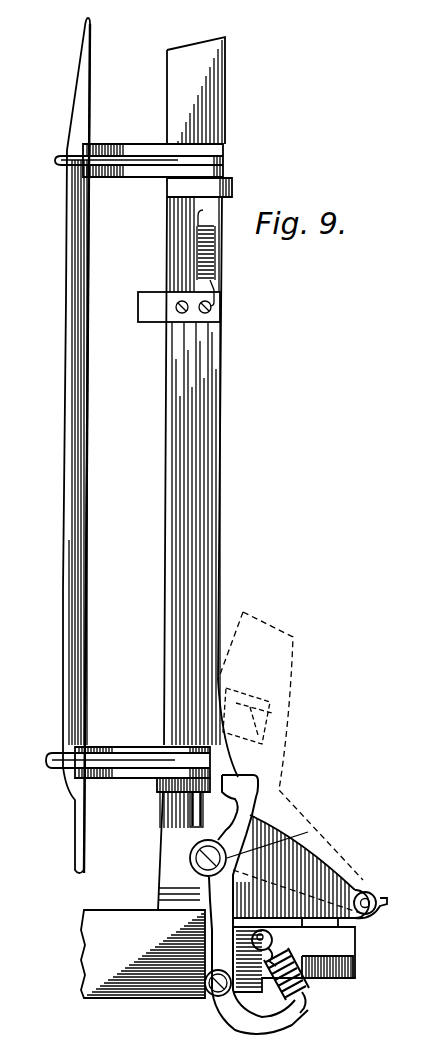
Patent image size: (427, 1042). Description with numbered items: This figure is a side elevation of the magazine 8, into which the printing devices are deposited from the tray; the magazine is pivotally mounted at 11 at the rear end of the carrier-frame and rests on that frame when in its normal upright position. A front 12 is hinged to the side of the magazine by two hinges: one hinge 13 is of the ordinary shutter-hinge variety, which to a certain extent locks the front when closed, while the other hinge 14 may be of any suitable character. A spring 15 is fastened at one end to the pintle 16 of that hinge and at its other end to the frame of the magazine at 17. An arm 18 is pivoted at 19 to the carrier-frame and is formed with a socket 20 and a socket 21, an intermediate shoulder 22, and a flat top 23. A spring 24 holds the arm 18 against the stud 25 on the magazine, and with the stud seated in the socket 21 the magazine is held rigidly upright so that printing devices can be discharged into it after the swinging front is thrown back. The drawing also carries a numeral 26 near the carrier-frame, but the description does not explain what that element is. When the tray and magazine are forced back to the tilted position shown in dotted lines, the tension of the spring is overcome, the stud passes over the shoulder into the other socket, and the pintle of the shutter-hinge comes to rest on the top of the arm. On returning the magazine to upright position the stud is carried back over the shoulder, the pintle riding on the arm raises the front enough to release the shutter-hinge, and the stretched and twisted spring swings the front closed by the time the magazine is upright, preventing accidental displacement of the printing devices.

The magazine 8 is at (208, 530).
The pivot 11 is at (367, 899).
The front 12 is at (66, 503).
The hinge 13 is at (190, 768).
The hinge 14 is at (227, 175).
The spring 15 is at (232, 259).
The pintle 16 is at (141, 185).
The fastening point on magazine frame 17 is at (221, 311).
The arm 18 is at (243, 887).
The pivot 19 is at (213, 1000).
The socket 20 is at (262, 803).
The socket 21 is at (279, 842).
The shoulder 22 is at (204, 841).
The flat top 23 is at (240, 778).
The spring 24 is at (300, 984).
The stud 25 is at (192, 862).
The block 26 is at (426, 815).